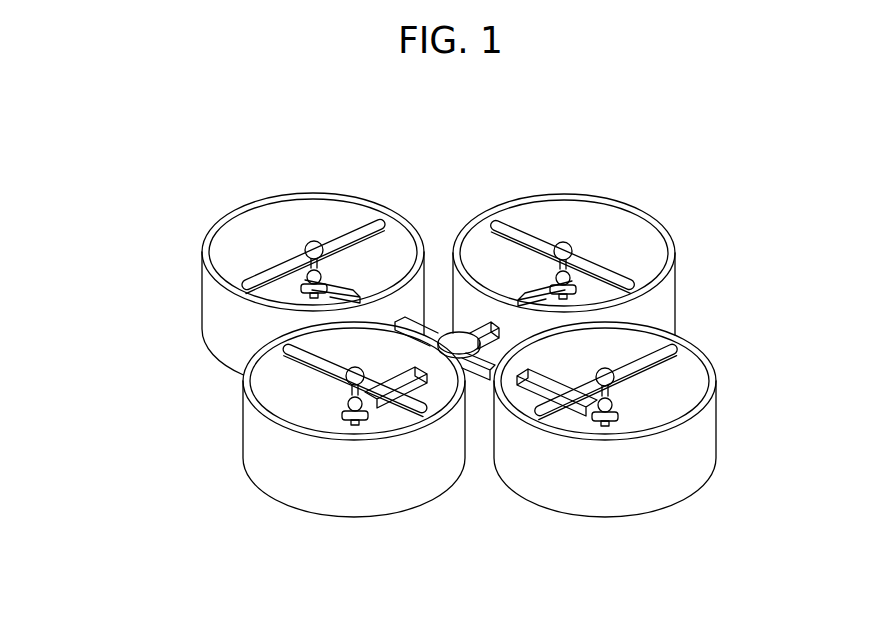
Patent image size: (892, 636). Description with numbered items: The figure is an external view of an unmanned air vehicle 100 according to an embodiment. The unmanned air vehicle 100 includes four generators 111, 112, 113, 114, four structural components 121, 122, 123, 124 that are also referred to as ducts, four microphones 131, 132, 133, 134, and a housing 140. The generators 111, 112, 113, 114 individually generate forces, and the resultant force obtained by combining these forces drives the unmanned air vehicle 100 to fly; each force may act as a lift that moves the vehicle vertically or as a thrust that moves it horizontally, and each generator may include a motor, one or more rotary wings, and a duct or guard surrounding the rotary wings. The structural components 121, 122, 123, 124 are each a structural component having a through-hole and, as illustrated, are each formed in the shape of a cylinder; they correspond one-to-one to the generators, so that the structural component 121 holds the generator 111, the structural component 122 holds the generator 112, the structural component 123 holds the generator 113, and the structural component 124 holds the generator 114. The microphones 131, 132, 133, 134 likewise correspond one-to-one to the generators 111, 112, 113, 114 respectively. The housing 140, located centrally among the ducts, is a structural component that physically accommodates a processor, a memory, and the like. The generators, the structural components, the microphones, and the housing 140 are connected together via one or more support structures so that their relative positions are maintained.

The unmanned air vehicle 100 is at (697, 90).
The generator 111 is at (353, 226).
The generator 112 is at (537, 232).
The generator 113 is at (300, 368).
The generator 114 is at (645, 373).
The structural component (duct) 121 is at (203, 305).
The structural component (duct) 122 is at (676, 305).
The structural component (duct) 123 is at (352, 518).
The structural component (duct) 124 is at (603, 520).
The microphone 131 is at (302, 252).
The microphone 132 is at (578, 252).
The microphone 133 is at (343, 403).
The microphone 134 is at (615, 405).
The housing 140 is at (447, 332).